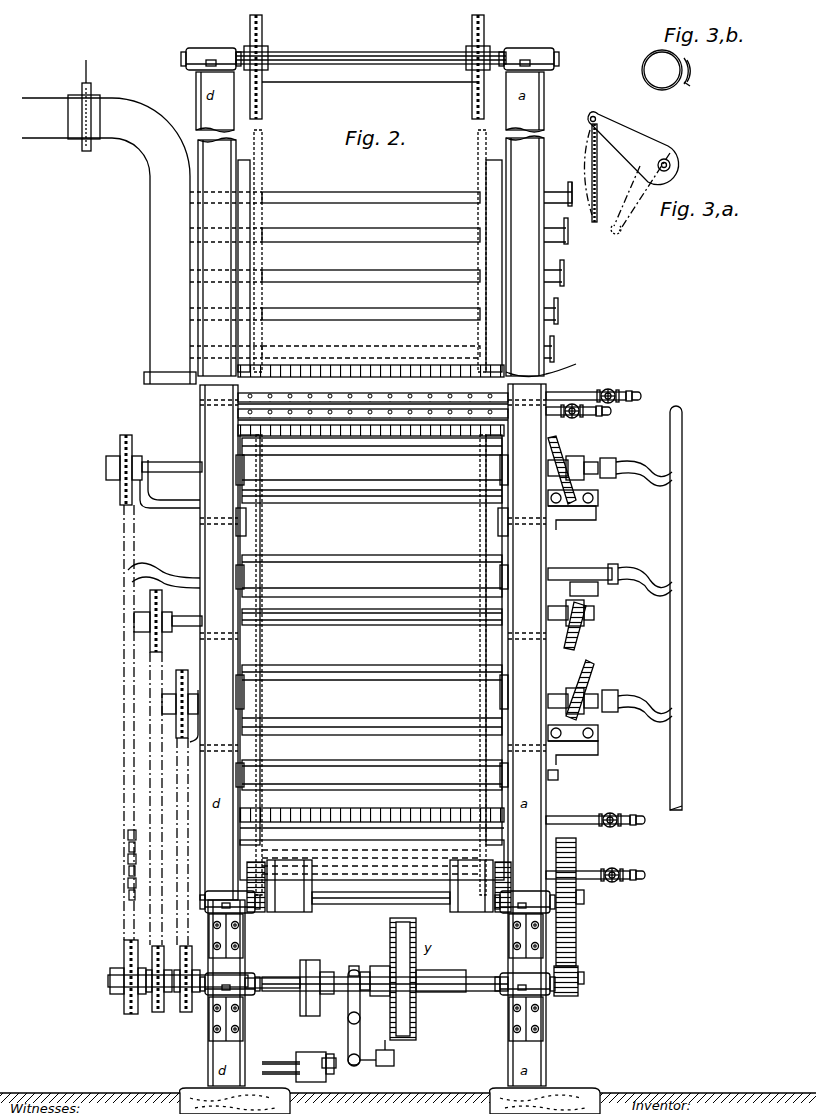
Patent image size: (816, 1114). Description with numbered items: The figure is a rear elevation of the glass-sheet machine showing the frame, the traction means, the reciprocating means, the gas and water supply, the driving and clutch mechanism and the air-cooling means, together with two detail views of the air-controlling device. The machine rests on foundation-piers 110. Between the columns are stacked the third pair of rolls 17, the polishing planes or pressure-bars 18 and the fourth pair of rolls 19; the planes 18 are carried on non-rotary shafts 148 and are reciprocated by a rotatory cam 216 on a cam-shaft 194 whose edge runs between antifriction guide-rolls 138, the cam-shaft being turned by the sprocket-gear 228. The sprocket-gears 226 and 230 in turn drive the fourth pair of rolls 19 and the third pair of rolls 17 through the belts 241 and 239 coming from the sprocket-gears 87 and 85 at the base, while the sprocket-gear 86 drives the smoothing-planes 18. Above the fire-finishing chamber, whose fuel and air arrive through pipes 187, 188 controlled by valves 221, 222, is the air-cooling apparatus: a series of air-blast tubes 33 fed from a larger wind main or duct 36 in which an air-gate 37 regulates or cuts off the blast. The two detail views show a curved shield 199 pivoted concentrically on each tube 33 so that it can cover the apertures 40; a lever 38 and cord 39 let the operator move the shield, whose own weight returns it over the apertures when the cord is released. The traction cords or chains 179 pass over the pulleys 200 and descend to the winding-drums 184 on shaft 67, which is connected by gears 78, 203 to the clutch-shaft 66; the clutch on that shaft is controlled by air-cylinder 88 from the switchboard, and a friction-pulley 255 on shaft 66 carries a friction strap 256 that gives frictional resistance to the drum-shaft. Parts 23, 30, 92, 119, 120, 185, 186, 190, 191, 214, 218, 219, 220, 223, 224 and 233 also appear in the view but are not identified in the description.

In FIG. 2, the third pair of rolls 17 is at (372, 700).
In FIG. 2, the polishing planes 18 is at (372, 576).
In FIG. 2, the fourth pair of rolls 19 is at (372, 470).
In FIG. 2, the guide bar 23 is at (547, 365).
In FIG. 2, the roller 30 is at (372, 775).
In FIG. 2, the air-blast tubes 33 is at (371, 273).
In FIG. 3b, the air-blast tubes 33 is at (662, 70).
In FIG. 2, the wind main 36 is at (109, 241).
In FIG. 2, the air-gate 37 is at (88, 105).
In FIG. 2, the lever 38 is at (564, 266).
In FIG. 3a, the lever 38 is at (633, 148).
In FIG. 3a, the cord 39 is at (627, 179).
In FIG. 3b, the apertures 40 is at (688, 88).
In FIG. 2, the clutch-shaft 66 is at (385, 971).
In FIG. 2, the drum-shaft 67 is at (365, 905).
In FIG. 2, the gear 78 is at (576, 848).
In FIG. 2, the sprocket-gear 85 is at (186, 989).
In FIG. 2, the sprocket-gear 86 is at (157, 989).
In FIG. 2, the sprocket-gear 87 is at (128, 986).
In FIG. 2, the air-cylinder 88 is at (316, 1073).
In FIG. 2, the bolted plate 92 is at (212, 1035).
In FIG. 2, the foundation-piers 110 is at (408, 1101).
In FIG. 2, the rod 119 is at (273, 1055).
In FIG. 2, the rod 120 is at (275, 1074).
In FIG. 2, the antifriction guide-rolls 138 is at (600, 498).
In FIG. 2, the non-rotary shafts 148 is at (610, 573).
In FIG. 2, the traction cords 179 is at (250, 521).
In FIG. 2, the winding-drums 184 is at (379, 886).
In FIG. 2, the link 185 is at (336, 1016).
In FIG. 2, the crank 186 is at (388, 1050).
In FIG. 2, the supply pipe 187 is at (636, 395).
In FIG. 2, the supply pipe 188 is at (604, 412).
In FIG. 2, the bearing 190 is at (214, 47).
In FIG. 2, the shaft 191 is at (328, 54).
In FIG. 2, the cam-shaft 194 is at (372, 624).
In FIG. 3b, the curved shield 199 is at (690, 66).
In FIG. 2, the pulleys 200 is at (369, 59).
In FIG. 2, the gear 203 is at (582, 983).
In FIG. 2, the lever 214 is at (560, 447).
In FIG. 2, the rotatory cam 216 is at (580, 638).
In FIG. 2, the lever 218 is at (598, 672).
In FIG. 2, the nozzle 219 is at (650, 825).
In FIG. 2, the nozzle 220 is at (651, 880).
In FIG. 2, the valve 221 is at (586, 385).
In FIG. 2, the valve 222 is at (573, 418).
In FIG. 2, the valve 223 is at (588, 811).
In FIG. 2, the valve 224 is at (594, 865).
In FIG. 2, the sprocket-gear 226 is at (154, 463).
In FIG. 2, the sprocket-gear 228 is at (150, 586).
In FIG. 2, the sprocket-gear 230 is at (184, 670).
In FIG. 2, the pipe 233 is at (664, 608).
In FIG. 2, the belt 239 is at (188, 838).
In FIG. 2, the belt 241 is at (128, 845).
In FIG. 2, the friction-pulley 255 is at (291, 987).
In FIG. 2, the friction strap 256 is at (300, 1002).